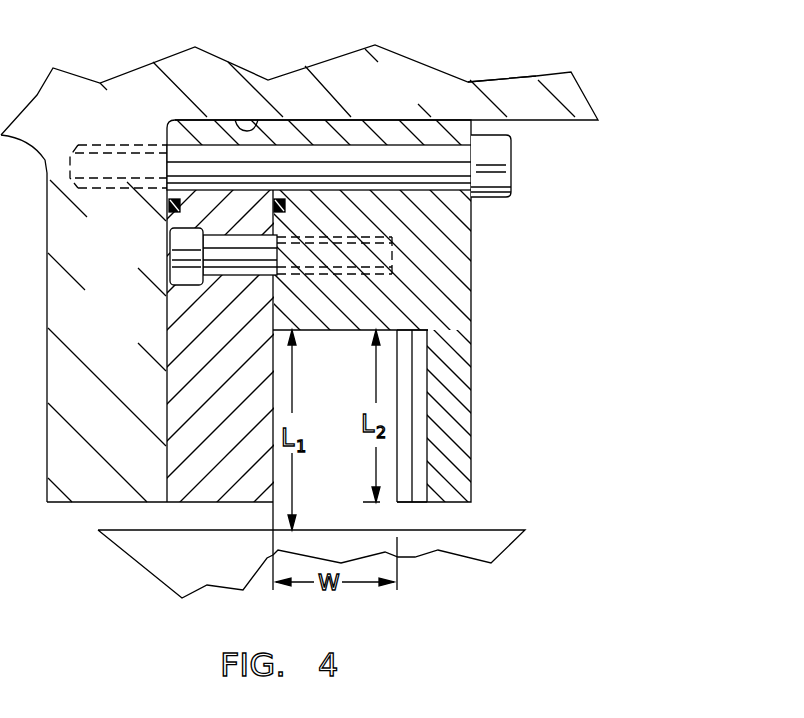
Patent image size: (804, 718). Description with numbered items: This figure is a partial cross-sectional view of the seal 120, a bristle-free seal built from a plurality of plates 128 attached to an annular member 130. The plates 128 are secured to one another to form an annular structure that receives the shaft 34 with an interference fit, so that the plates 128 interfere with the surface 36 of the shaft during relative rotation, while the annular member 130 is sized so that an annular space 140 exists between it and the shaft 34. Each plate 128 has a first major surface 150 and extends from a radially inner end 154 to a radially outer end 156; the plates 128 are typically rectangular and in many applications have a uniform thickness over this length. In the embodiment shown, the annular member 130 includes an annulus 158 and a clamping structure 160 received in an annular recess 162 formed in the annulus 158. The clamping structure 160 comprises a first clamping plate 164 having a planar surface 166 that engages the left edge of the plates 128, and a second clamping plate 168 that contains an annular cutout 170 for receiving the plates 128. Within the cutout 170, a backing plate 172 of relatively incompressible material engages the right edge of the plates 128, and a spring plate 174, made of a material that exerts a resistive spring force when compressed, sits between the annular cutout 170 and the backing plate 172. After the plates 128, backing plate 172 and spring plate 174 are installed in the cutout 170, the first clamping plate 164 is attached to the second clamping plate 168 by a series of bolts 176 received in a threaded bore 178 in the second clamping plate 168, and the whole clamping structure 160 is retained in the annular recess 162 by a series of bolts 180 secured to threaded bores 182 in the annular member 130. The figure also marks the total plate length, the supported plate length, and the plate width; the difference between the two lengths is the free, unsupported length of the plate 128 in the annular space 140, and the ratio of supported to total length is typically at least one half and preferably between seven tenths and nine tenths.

The seal 120 is at (555, 317).
The plates 128 is at (382, 377).
The annular member 130 is at (530, 65).
The annular space 140 is at (162, 517).
The first major surface 150 is at (358, 385).
The radially inner end 154 is at (361, 528).
The radially outer end 156 is at (331, 328).
The annulus 158 is at (428, 78).
The clamping structure 160 is at (490, 237).
The annular recess 162 is at (260, 118).
The first clamping plate 164 is at (197, 320).
The planar surface 166 is at (274, 392).
The second clamping plate 168 is at (455, 265).
The annular cutout 170 is at (384, 333).
The backing plate 172 is at (402, 445).
The spring plate 174 is at (418, 405).
The bolts 176 is at (184, 251).
The threaded bore 178 is at (338, 248).
The bolts 180 is at (328, 155).
The threaded bores 182 is at (117, 150).
The shaft 34 is at (496, 546).
The surface 36 is at (222, 572).